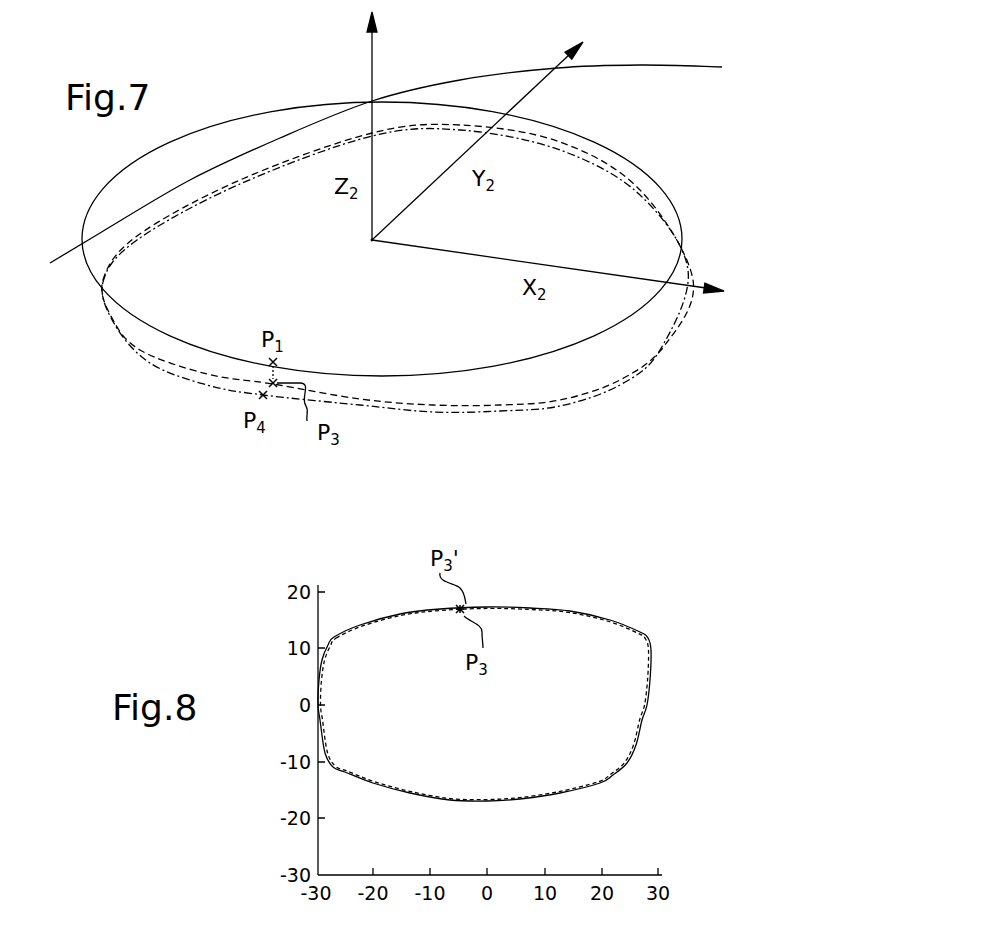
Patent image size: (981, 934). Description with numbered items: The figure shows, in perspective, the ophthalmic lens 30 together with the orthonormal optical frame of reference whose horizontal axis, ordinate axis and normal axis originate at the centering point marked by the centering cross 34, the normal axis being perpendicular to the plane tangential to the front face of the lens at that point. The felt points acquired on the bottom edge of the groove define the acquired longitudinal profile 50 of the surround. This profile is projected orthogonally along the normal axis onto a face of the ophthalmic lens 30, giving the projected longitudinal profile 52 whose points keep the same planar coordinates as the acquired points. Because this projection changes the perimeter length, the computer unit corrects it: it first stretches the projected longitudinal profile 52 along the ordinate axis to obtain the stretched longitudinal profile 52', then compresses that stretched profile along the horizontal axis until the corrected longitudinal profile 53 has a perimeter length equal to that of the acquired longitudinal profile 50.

In FIG. 7, the ophthalmic lens 30 is at (637, 63).
In FIG. 7, the centering cross 34 is at (370, 244).
In FIG. 7, the longitudinal profile 50 is at (586, 141).
In FIG. 7, the projected longitudinal profile 52 is at (403, 273).
In FIG. 8, the projected longitudinal profile 52 is at (484, 704).
In FIG. 8, the stretched longitudinal profile 52' is at (484, 678).
In FIG. 7, the corrected longitudinal profile 53 is at (688, 315).